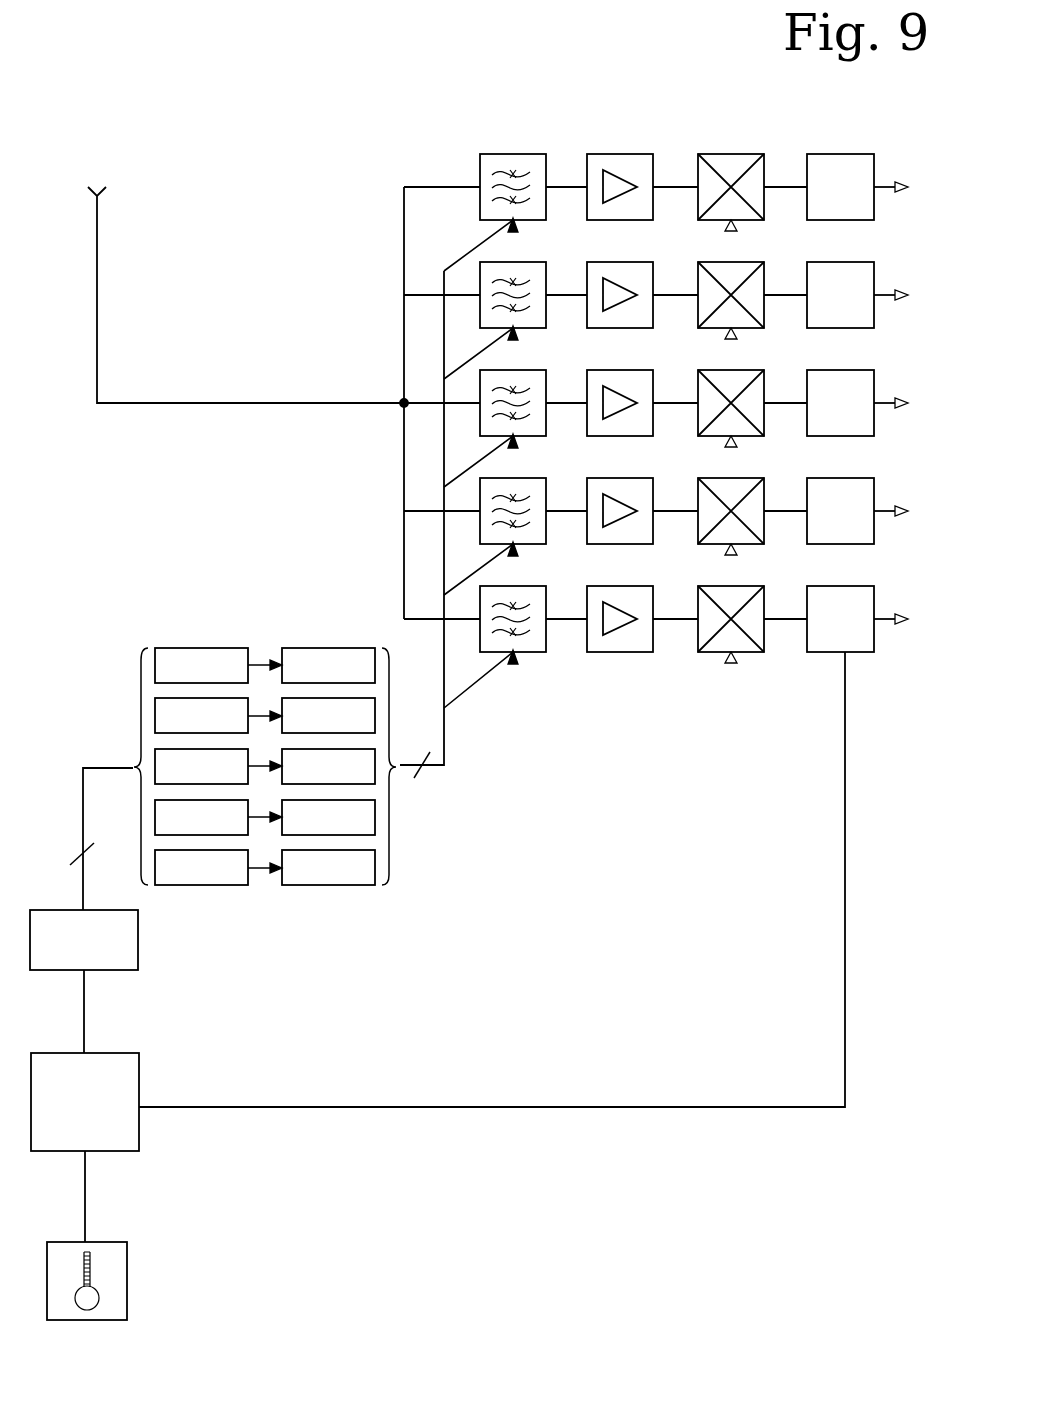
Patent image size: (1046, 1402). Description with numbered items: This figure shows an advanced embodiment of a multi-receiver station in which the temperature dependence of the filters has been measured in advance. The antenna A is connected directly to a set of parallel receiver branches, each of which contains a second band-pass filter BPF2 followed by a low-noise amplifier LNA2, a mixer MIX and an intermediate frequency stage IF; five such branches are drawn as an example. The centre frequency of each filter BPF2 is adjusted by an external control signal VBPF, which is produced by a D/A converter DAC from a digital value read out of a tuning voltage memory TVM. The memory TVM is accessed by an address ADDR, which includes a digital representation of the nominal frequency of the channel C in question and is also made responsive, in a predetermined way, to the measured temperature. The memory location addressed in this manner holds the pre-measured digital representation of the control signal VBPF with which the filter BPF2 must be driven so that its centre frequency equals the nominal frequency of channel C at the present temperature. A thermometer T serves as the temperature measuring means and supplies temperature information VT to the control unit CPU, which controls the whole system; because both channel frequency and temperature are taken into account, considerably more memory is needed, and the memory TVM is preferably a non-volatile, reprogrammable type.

The antenna A is at (99, 247).
The second band-pass filter BPF2 is at (513, 152).
The low-noise amplifier LNA2 is at (620, 152).
The mixer MIX is at (730, 152).
The intermediate frequency stage IF is at (837, 152).
The control signal VBPF is at (450, 765).
The tuning voltage memory TVM is at (205, 645).
The D/A converter DAC is at (313, 645).
The address ADDR is at (80, 763).
The channel C is at (84, 981).
The control unit CPU is at (140, 1051).
The temperature information VT is at (87, 1193).
The thermometer T is at (126, 1240).